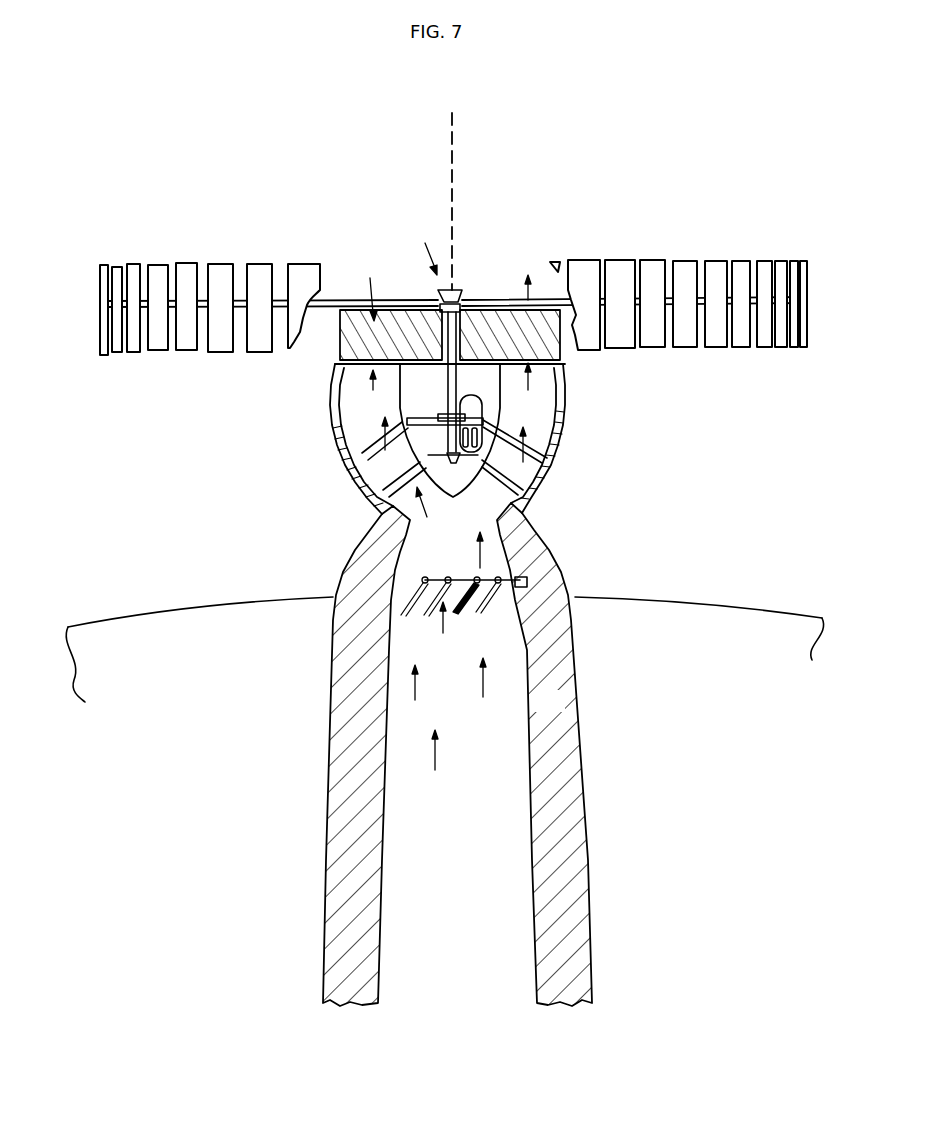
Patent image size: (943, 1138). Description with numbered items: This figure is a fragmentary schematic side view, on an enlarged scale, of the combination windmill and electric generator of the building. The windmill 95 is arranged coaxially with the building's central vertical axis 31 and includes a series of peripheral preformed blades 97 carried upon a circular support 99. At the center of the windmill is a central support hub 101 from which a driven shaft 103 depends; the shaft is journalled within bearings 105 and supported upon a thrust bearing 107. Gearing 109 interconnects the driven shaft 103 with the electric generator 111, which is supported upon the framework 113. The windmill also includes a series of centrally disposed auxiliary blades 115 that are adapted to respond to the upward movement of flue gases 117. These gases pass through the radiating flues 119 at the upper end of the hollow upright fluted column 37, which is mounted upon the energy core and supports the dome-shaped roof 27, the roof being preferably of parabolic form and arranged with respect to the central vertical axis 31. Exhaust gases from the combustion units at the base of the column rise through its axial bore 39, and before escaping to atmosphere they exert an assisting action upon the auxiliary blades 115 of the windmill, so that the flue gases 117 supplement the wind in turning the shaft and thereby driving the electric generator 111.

The dome-shaped roof 27 is at (740, 603).
The central vertical axis 31 is at (452, 150).
The upright fluted column 37 is at (476, 754).
The axial bore 39 is at (560, 711).
The windmill 95 is at (421, 250).
The peripheral preformed blades 97 is at (625, 260).
The circular support 99 is at (503, 293).
The central support hub 101 is at (453, 290).
The driven shaft 103 is at (432, 300).
The bearings 105 is at (433, 420).
The thrust bearing 107 is at (455, 484).
The gearing 109 is at (443, 410).
The electric generator 111 is at (473, 402).
The framework 113 is at (505, 470).
The auxiliary blades 115 is at (360, 307).
The flue gases 117 is at (450, 800).
The radiating flues 119 is at (422, 580).